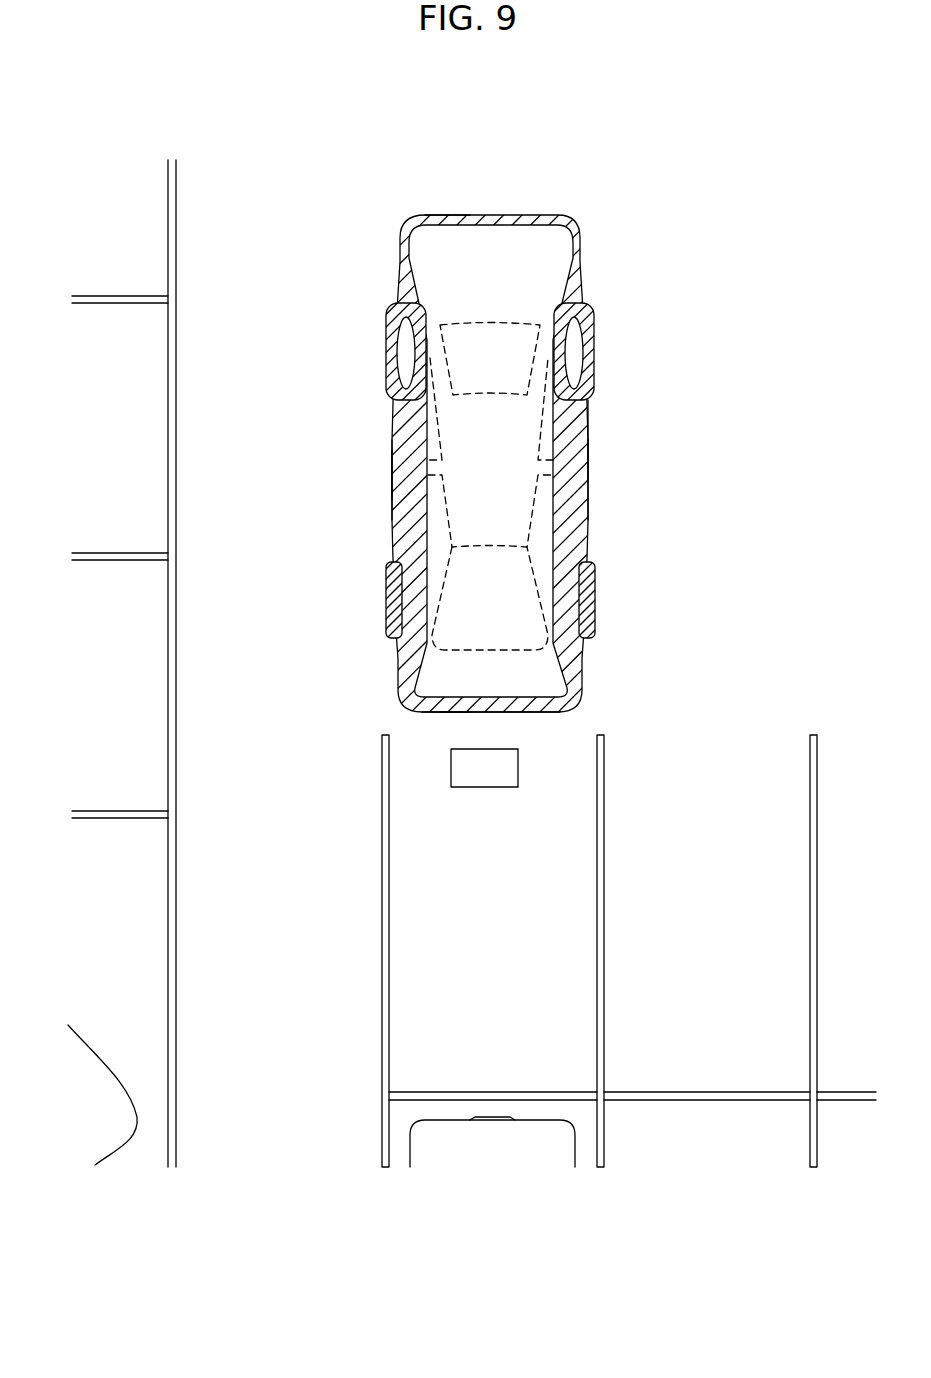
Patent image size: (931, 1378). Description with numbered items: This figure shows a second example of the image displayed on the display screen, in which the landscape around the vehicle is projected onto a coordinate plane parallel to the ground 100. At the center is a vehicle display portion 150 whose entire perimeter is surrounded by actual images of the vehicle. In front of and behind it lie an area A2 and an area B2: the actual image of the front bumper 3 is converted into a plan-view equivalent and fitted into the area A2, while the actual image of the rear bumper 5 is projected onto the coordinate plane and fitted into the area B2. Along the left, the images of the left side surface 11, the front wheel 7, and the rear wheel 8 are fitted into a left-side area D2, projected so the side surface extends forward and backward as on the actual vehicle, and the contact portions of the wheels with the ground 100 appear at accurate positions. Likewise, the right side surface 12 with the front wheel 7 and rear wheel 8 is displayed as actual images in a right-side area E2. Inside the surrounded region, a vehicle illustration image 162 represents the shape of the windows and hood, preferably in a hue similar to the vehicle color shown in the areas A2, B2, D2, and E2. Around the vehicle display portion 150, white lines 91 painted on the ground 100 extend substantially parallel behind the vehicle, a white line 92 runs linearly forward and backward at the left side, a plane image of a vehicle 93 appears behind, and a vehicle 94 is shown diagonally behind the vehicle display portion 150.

The front bumper 3 is at (513, 222).
The rear bumper 5 is at (438, 708).
The front wheel 7 is at (386, 346).
The rear wheel 8 is at (392, 586).
The left side surface 11 is at (410, 437).
The right side surface 12 is at (576, 521).
The vehicle illustration image 162 is at (513, 350).
The vehicle display portion 150 is at (602, 477).
The ground 100 is at (728, 699).
The white lines 91 is at (381, 838).
The white line 92 is at (177, 612).
The vehicle 93 is at (446, 1155).
The vehicle 94 is at (80, 1078).
The area A2 is at (433, 215).
The area B2 is at (407, 702).
The left-side area D2 is at (412, 472).
The right-side area E2 is at (571, 441).